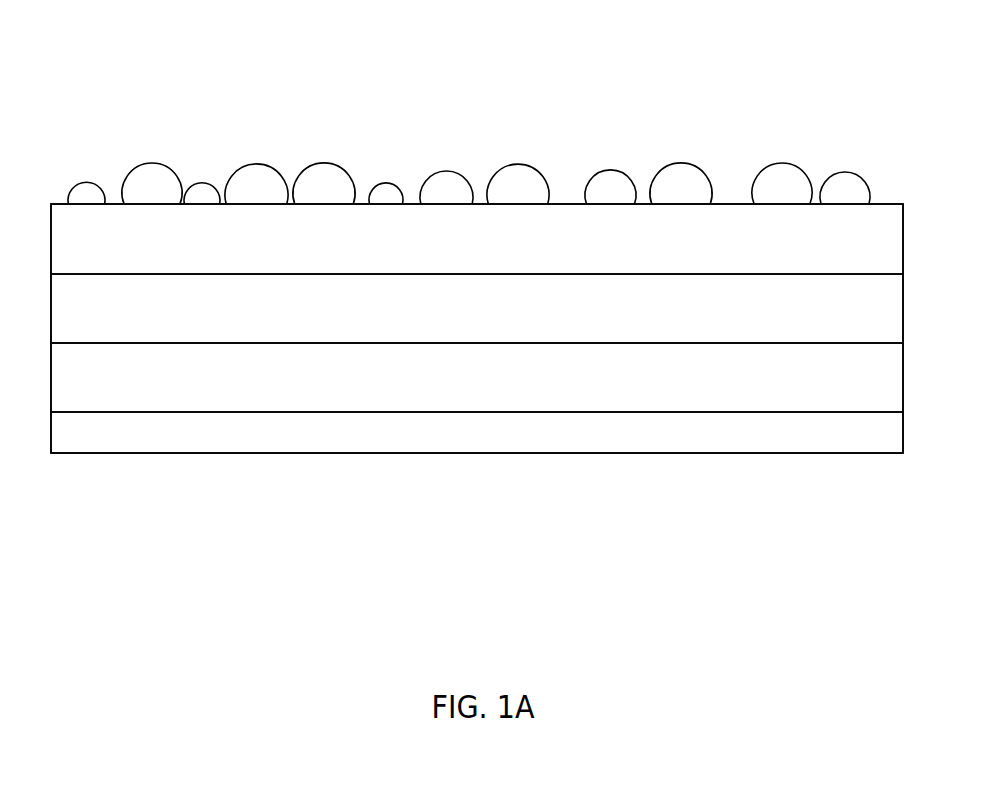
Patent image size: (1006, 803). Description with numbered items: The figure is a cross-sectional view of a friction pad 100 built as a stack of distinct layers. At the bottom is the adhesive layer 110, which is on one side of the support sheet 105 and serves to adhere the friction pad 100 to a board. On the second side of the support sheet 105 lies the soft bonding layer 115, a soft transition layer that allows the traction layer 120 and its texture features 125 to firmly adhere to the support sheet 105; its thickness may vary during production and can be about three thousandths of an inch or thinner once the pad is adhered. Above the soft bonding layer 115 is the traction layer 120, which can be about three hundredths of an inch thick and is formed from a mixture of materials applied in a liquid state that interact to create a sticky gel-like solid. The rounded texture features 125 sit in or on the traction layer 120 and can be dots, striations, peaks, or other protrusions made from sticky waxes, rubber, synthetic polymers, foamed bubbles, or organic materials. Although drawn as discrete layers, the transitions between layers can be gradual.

The friction pad 100 is at (928, 61).
The support sheet 105 is at (453, 388).
The adhesive layer 110 is at (453, 447).
The soft bonding layer 115 is at (453, 316).
The traction layer 120 is at (453, 248).
The texture features 125 is at (678, 179).